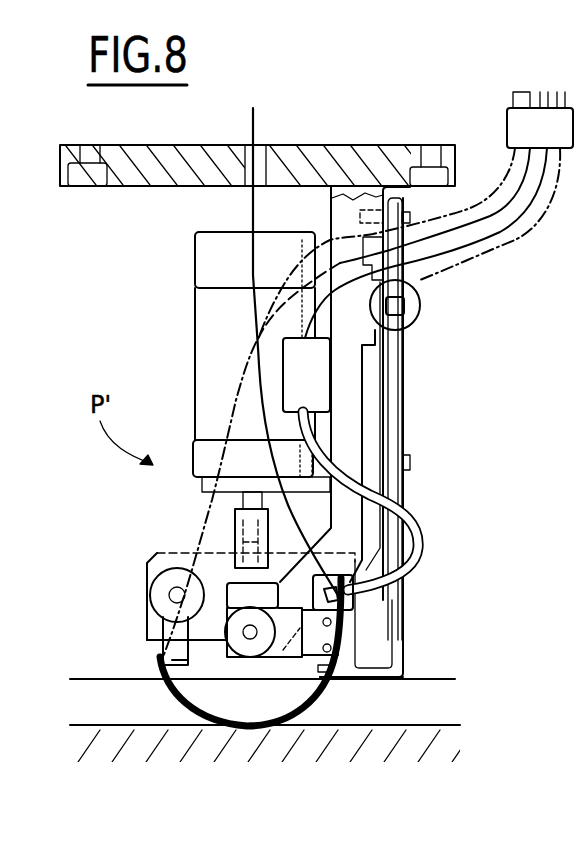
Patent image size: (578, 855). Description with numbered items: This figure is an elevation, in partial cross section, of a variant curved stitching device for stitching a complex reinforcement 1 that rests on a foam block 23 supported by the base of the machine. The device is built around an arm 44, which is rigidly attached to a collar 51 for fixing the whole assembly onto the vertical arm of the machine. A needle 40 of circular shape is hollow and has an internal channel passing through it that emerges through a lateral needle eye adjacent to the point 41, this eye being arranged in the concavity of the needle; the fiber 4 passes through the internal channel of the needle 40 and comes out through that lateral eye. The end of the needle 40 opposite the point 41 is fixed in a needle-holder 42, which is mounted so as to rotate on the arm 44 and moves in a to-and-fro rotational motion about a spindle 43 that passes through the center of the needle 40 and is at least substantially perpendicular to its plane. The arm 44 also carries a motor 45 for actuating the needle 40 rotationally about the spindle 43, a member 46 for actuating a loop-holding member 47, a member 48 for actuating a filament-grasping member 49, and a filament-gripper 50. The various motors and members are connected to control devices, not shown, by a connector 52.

The complex reinforcement 1 is at (420, 700).
The fiber 4 is at (256, 127).
The foam block 23 is at (436, 742).
The needle 40 is at (322, 702).
The point 41 is at (160, 655).
The needle-holder 42 is at (290, 652).
The spindle 43 is at (240, 617).
The arm 44 is at (347, 423).
The motor 45 is at (205, 334).
The member for actuating a loop-holding member 46 is at (317, 378).
The loop-holding member 47 is at (177, 655).
The member for actuating a filament-grasping member 48 is at (412, 303).
The filament-grasping member 49 is at (357, 672).
The filament-gripper 50 is at (349, 601).
The collar 51 is at (181, 163).
The connector 52 is at (507, 122).